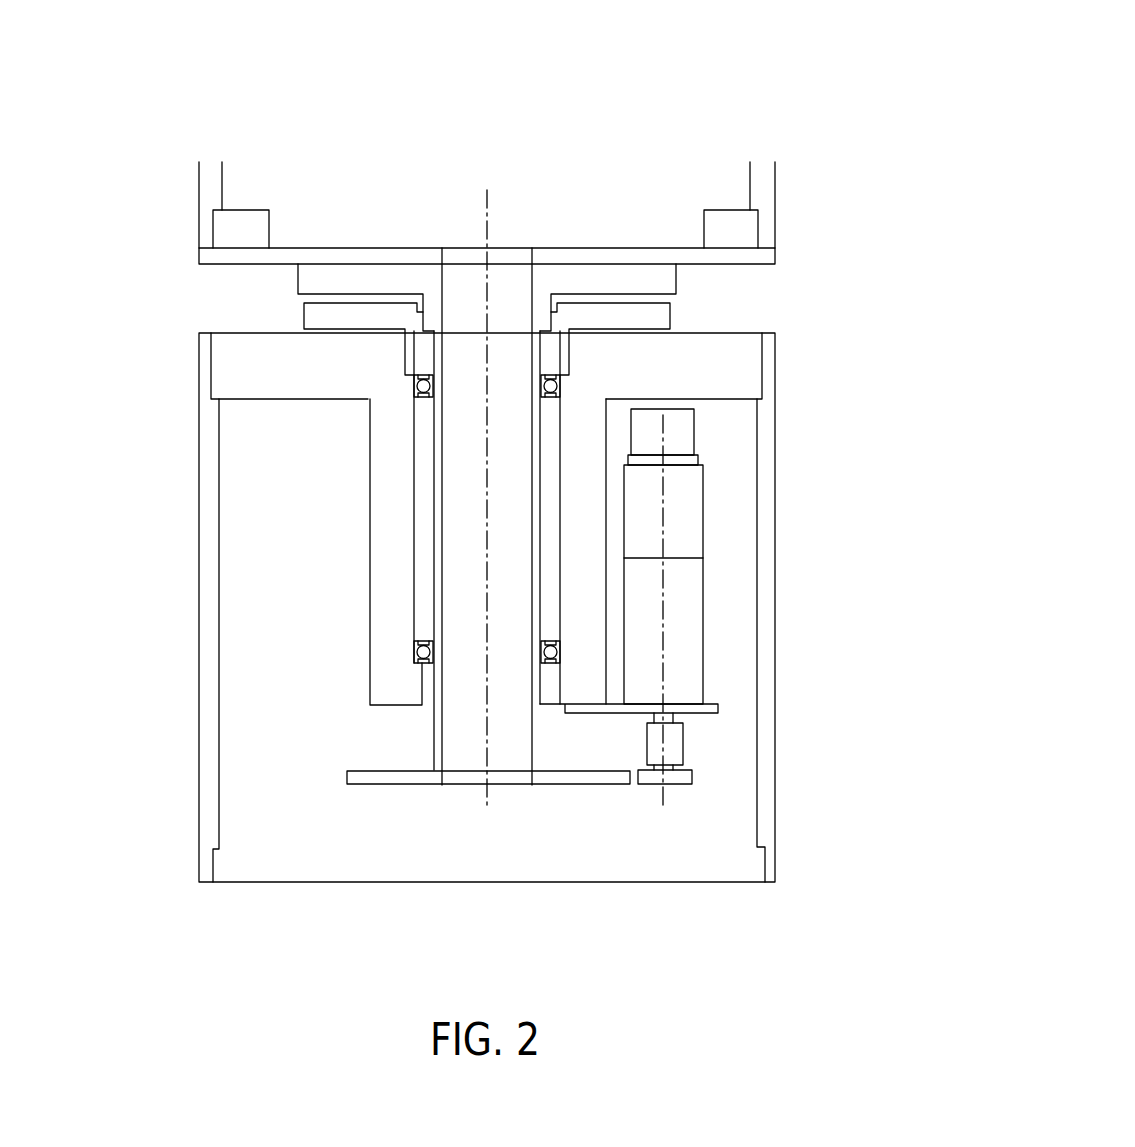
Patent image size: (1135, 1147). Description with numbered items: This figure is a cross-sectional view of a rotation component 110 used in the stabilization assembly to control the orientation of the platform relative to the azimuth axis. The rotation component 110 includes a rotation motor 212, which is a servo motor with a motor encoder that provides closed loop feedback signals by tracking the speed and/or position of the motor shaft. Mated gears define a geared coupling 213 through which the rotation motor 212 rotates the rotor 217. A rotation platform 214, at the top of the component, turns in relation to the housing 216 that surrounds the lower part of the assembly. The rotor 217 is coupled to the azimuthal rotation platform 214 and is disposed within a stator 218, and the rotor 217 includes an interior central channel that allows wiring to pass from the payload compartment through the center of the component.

The rotation component 110 is at (721, 70).
The rotation motor 212 is at (703, 500).
The geared coupling 213 is at (650, 784).
The rotation platform 214 is at (775, 190).
The housing 216 is at (199, 549).
The rotor 217 is at (434, 727).
The stator 218 is at (370, 663).